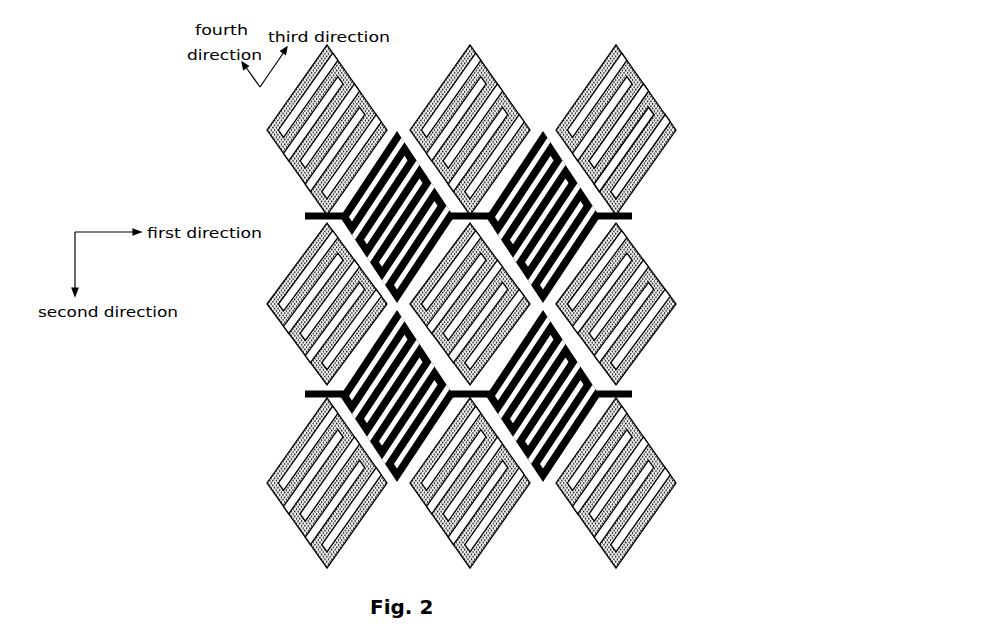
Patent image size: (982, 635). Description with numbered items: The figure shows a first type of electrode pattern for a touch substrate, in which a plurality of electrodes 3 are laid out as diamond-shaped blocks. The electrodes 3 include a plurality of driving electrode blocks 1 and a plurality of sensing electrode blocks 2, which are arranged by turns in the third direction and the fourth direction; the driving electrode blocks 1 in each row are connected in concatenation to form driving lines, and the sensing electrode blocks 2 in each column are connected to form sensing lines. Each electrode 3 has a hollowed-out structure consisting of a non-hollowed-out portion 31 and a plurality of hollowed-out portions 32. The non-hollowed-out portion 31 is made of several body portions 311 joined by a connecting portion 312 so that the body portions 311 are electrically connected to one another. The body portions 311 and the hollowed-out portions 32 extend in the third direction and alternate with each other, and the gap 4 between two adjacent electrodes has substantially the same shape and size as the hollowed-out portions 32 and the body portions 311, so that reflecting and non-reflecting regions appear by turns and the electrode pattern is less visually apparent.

The driving electrode block 1 is at (583, 249).
The sensing electrode block 2 is at (509, 306).
The electrode 3 is at (654, 130).
The non-hollowed-out portion 31 is at (664, 149).
The body portion 311 is at (647, 127).
The connecting portion 312 is at (650, 107).
The hollowed-out portion 32 is at (628, 168).
The gap 4 is at (603, 212).